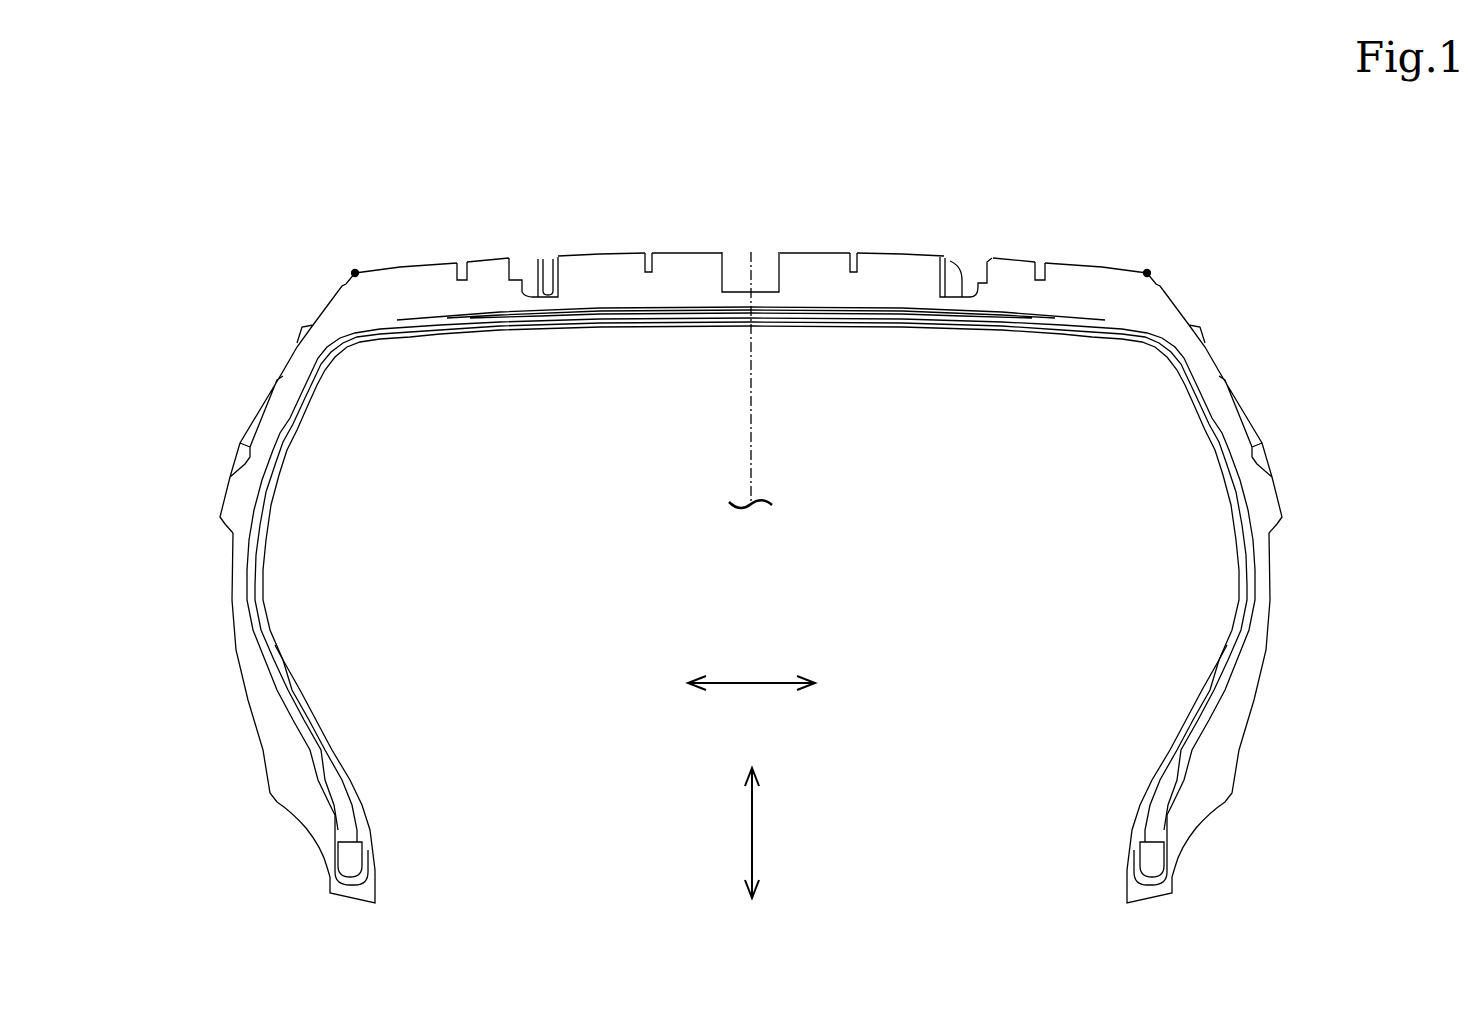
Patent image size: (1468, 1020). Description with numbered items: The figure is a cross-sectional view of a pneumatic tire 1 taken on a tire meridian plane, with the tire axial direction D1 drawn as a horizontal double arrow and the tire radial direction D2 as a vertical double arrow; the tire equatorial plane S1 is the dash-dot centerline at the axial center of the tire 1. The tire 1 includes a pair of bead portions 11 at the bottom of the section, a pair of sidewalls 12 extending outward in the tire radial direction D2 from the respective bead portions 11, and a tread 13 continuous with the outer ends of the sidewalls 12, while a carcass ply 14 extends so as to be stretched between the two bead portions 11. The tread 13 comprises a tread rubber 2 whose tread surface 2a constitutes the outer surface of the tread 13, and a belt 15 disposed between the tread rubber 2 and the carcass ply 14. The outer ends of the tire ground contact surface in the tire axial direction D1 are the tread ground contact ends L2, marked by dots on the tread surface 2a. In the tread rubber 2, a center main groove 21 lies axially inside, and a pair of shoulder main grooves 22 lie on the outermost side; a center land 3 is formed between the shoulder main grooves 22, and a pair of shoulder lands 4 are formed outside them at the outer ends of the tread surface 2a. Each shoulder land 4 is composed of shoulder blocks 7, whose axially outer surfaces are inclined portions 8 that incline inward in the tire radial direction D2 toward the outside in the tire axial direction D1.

The pneumatic tire 1 is at (1258, 192).
The tread 13 is at (1167, 192).
The carcass ply 14 is at (962, 327).
The belt 15 is at (907, 310).
The shoulder land 4 is at (412, 241).
The tread rubber 2 is at (1047, 224).
The tread surface 2a is at (805, 250).
The center land 3 is at (614, 242).
The center main groove 21 is at (725, 243).
The shoulder main groove 22 is at (509, 247).
The shoulder block 7 is at (390, 267).
The tread ground contact end L2 is at (355, 273).
The inclined portion 8 is at (304, 294).
The sidewall 12 is at (178, 409).
The bead portion 11 is at (271, 857).
The tire equatorial plane S1 is at (751, 466).
The tire axial direction D1 is at (751, 695).
The tire radial direction D2 is at (766, 833).